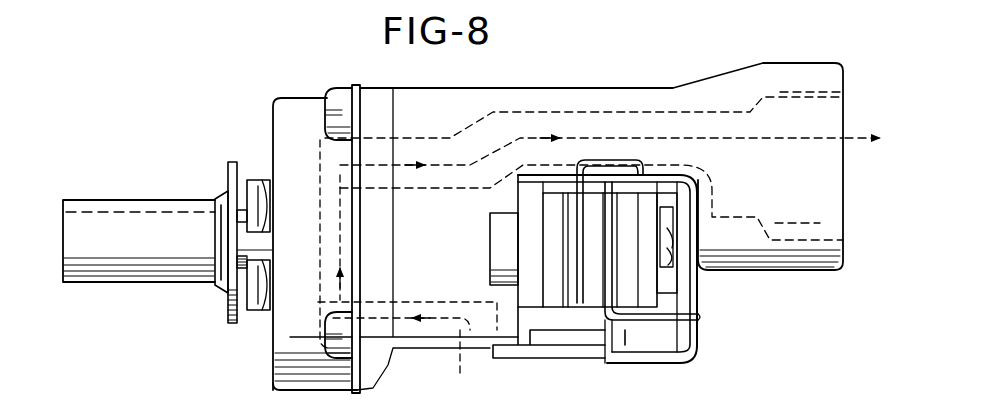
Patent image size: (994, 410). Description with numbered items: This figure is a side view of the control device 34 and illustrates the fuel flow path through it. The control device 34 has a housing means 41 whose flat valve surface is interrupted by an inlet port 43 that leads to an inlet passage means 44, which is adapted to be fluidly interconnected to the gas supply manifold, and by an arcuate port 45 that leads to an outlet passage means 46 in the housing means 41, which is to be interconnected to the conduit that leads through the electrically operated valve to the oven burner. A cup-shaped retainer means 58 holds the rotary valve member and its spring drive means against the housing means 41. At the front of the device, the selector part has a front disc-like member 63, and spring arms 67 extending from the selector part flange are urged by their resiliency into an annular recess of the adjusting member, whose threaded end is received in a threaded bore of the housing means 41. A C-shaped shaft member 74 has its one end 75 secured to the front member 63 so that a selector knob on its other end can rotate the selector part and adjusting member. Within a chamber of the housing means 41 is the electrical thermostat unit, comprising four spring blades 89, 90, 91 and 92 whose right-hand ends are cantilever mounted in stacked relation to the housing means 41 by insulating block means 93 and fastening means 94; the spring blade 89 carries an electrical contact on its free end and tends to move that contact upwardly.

The control device 34 is at (289, 57).
The housing means 41 is at (288, 106).
The inlet port 43 is at (376, 302).
The inlet passage means 44 is at (417, 302).
The arcuate port 45 is at (345, 140).
The outlet passage means 46 is at (534, 116).
The cup-shaped retainer means 58 is at (277, 338).
The front disc-like member 63 is at (228, 178).
The spring arms 67 is at (253, 190).
The shaft member 74 is at (132, 258).
The one end of shaft member 75 is at (210, 255).
The spring blade 89 is at (572, 240).
The spring blade 90 is at (609, 193).
The spring blade 91 is at (614, 193).
The spring blade 92 is at (641, 193).
The insulating block means 93 is at (625, 292).
The fastening means 94 is at (668, 262).